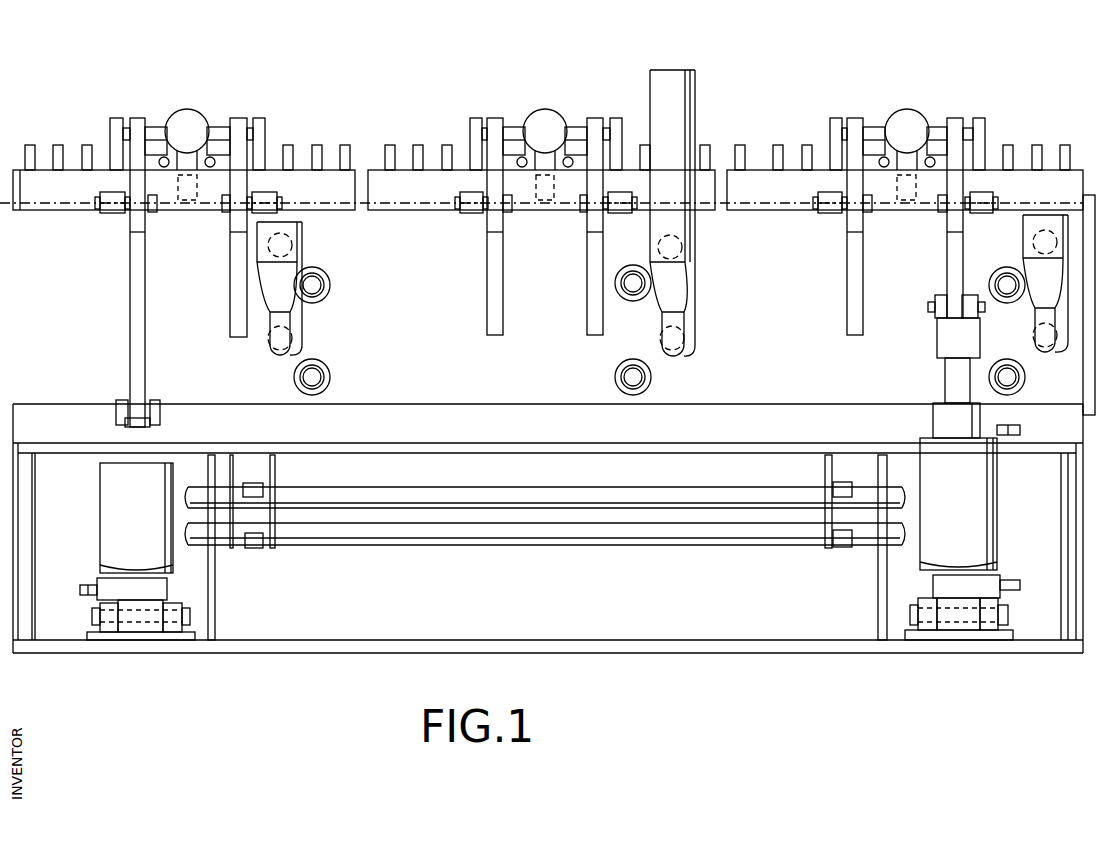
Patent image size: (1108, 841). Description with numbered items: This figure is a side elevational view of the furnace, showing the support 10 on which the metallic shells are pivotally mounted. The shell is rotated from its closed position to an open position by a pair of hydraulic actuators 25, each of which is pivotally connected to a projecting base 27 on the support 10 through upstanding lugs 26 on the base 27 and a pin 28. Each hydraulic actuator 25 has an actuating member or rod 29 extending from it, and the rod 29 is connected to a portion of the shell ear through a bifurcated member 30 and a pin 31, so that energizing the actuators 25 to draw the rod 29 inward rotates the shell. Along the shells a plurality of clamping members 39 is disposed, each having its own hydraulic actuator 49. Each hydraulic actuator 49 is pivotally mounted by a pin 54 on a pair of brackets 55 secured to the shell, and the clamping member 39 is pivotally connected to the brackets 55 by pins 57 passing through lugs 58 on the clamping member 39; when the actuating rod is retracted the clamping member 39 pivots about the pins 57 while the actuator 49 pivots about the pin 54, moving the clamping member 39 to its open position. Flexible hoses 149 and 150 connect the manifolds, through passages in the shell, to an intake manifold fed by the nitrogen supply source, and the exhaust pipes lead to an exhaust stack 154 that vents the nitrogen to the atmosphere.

The support 10 is at (525, 598).
The hydraulic actuator 25 is at (157, 542).
The upstanding lug 26 is at (108, 628).
The projecting base 27 is at (138, 648).
The pin 28 is at (190, 612).
The actuating member or rod 29 is at (948, 382).
The bifurcated member 30 is at (940, 340).
The pin 31 is at (932, 302).
The clamping member 39 is at (348, 140).
The hydraulic actuator 49 is at (925, 113).
The pin 54 is at (258, 134).
The bracket 55 is at (506, 282).
The pin 57 is at (872, 200).
The lug 58 is at (828, 214).
The flexible hose 149 is at (327, 370).
The flexible hose 150 is at (327, 278).
The exhaust stack 154 is at (700, 273).